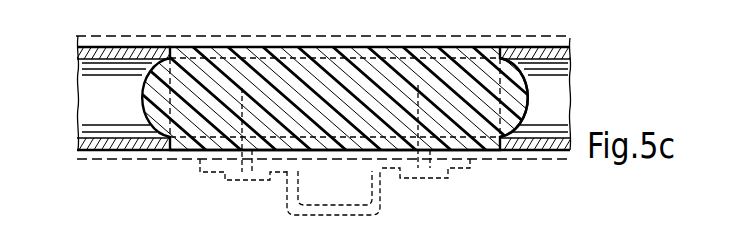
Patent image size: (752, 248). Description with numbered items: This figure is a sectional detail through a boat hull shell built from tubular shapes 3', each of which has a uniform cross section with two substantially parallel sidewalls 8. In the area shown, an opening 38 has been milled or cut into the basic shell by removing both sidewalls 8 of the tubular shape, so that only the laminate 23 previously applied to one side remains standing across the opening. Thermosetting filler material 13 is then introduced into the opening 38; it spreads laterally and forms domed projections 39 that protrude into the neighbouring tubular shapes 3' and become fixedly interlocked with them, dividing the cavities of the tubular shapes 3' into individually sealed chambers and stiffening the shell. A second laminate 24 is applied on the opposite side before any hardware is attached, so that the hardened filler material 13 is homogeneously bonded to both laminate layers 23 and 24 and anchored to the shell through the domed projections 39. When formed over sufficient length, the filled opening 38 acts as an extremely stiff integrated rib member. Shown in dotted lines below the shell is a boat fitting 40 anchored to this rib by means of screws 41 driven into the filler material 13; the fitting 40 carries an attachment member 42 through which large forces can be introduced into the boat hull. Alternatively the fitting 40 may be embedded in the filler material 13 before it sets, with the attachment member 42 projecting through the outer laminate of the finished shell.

The tubular shape 3' is at (312, 93).
The sidewall 8 is at (125, 48).
The thermosetting filler material 13 is at (277, 62).
The laminate 23 is at (513, 38).
The laminate 24 is at (520, 152).
The opening 38 is at (172, 151).
The domed projection 39 is at (532, 100).
The boat fitting 40 is at (215, 165).
The screw 41 is at (238, 179).
The attachment member 42 is at (378, 183).